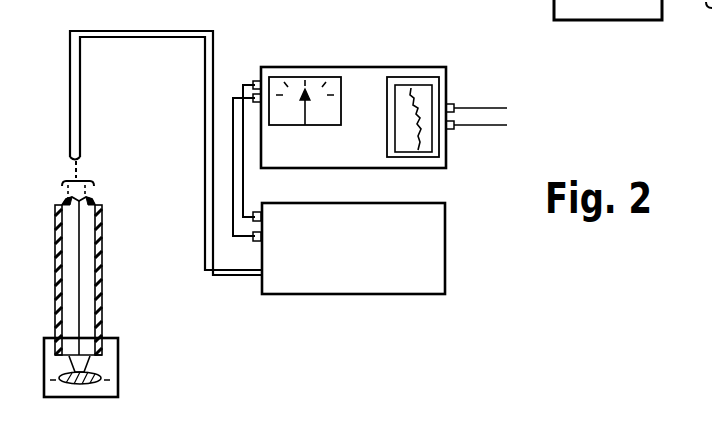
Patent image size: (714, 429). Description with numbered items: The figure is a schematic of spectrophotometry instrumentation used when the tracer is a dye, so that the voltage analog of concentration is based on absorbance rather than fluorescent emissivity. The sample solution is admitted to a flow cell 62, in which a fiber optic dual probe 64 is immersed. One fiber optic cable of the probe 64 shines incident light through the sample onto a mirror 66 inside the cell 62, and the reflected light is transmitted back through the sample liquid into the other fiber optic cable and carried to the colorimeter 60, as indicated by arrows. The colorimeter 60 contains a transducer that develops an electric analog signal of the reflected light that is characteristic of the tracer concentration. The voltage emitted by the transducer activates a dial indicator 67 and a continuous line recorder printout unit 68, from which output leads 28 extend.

The colorimeter 60 is at (442, 250).
The flow cell 62 is at (118, 352).
The fiber optic dual probe 64 is at (102, 258).
The mirror 66 is at (80, 384).
The dial indicator 67 is at (323, 77).
The continuous line recorder printout unit 68 is at (406, 80).
The output leads 28 is at (512, 98).